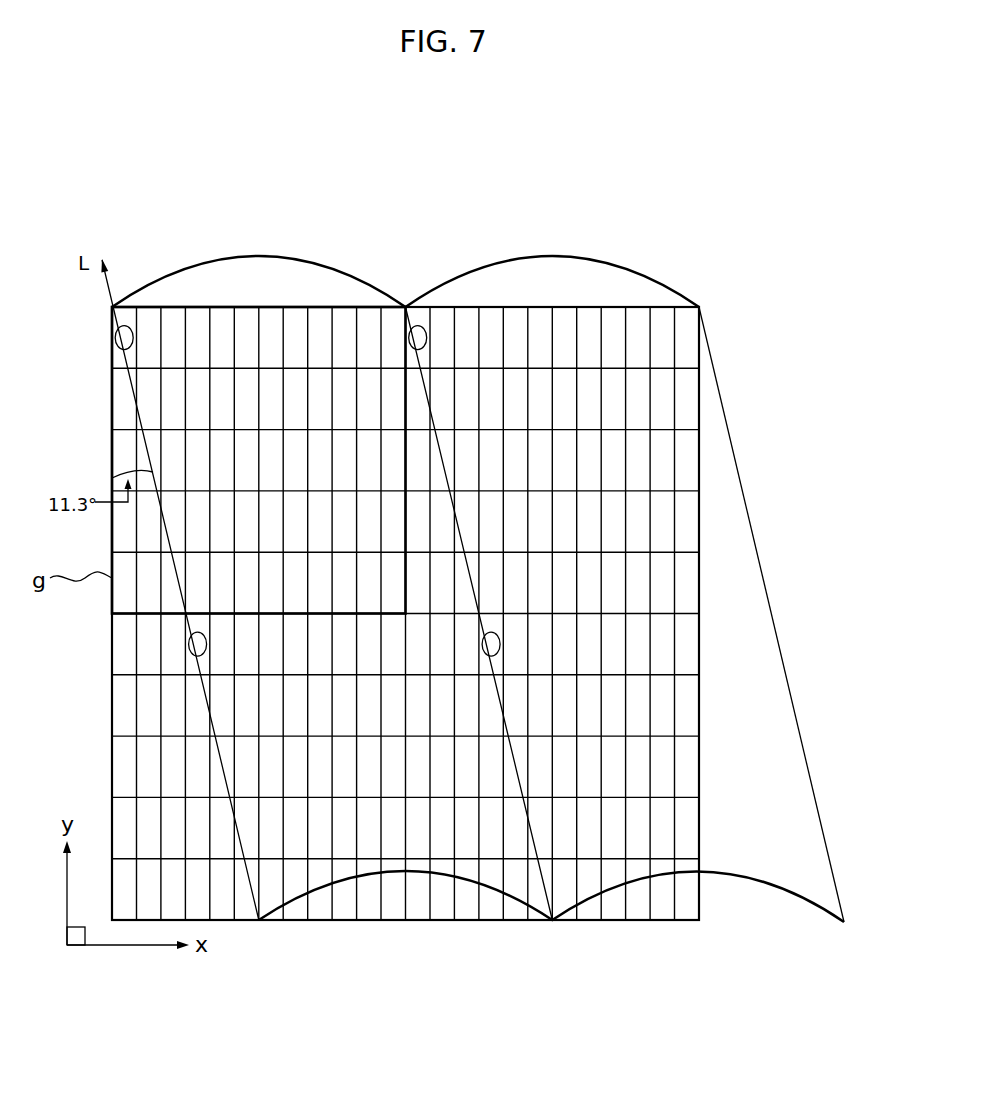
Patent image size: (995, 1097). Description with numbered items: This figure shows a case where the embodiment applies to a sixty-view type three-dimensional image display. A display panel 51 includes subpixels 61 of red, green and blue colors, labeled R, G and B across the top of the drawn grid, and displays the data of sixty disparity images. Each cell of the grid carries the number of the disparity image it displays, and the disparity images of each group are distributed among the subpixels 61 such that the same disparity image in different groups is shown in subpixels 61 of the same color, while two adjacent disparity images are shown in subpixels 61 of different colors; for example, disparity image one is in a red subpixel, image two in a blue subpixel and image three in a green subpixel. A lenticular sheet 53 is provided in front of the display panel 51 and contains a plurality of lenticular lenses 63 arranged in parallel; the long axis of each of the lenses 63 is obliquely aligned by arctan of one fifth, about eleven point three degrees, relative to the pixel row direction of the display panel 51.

The display panel 51 is at (716, 566).
The lenticular sheet 53 is at (732, 362).
The subpixels 61 is at (112, 310).
The lenticular lenses 63 is at (657, 277).